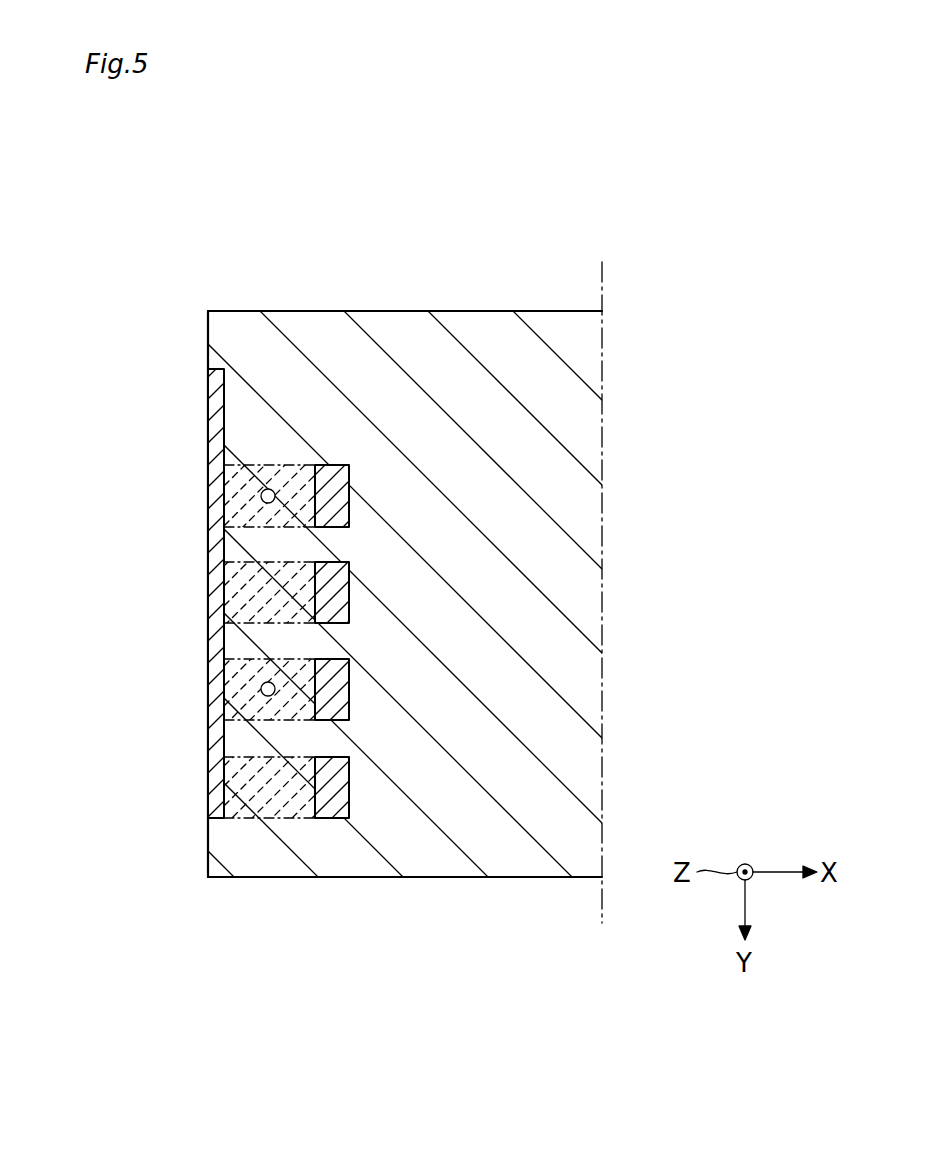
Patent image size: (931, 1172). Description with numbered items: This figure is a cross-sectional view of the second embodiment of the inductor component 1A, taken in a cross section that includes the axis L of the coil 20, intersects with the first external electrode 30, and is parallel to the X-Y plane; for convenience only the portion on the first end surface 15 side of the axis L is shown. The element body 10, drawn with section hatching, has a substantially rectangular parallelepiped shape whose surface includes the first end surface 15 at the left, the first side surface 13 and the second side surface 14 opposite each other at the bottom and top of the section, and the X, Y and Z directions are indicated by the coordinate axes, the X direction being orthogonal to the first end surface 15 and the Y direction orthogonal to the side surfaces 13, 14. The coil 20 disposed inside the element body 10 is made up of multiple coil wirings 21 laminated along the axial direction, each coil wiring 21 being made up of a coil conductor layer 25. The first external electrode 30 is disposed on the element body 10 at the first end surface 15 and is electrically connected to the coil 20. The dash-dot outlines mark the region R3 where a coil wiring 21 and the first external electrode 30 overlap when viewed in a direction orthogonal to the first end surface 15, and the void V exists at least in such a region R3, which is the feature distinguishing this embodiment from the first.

The inductor component 1A is at (465, 562).
The element body 10 is at (346, 328).
The first side surface 13 is at (519, 878).
The second side surface 14 is at (563, 310).
The first end surface 15 is at (208, 346).
The coil 20 is at (237, 607).
The coil wiring 21 is at (326, 486).
The coil conductor layer 25 is at (345, 583).
The first external electrode 30 is at (198, 498).
The region R3 is at (240, 487).
The void V is at (267, 488).
The axis L is at (603, 903).